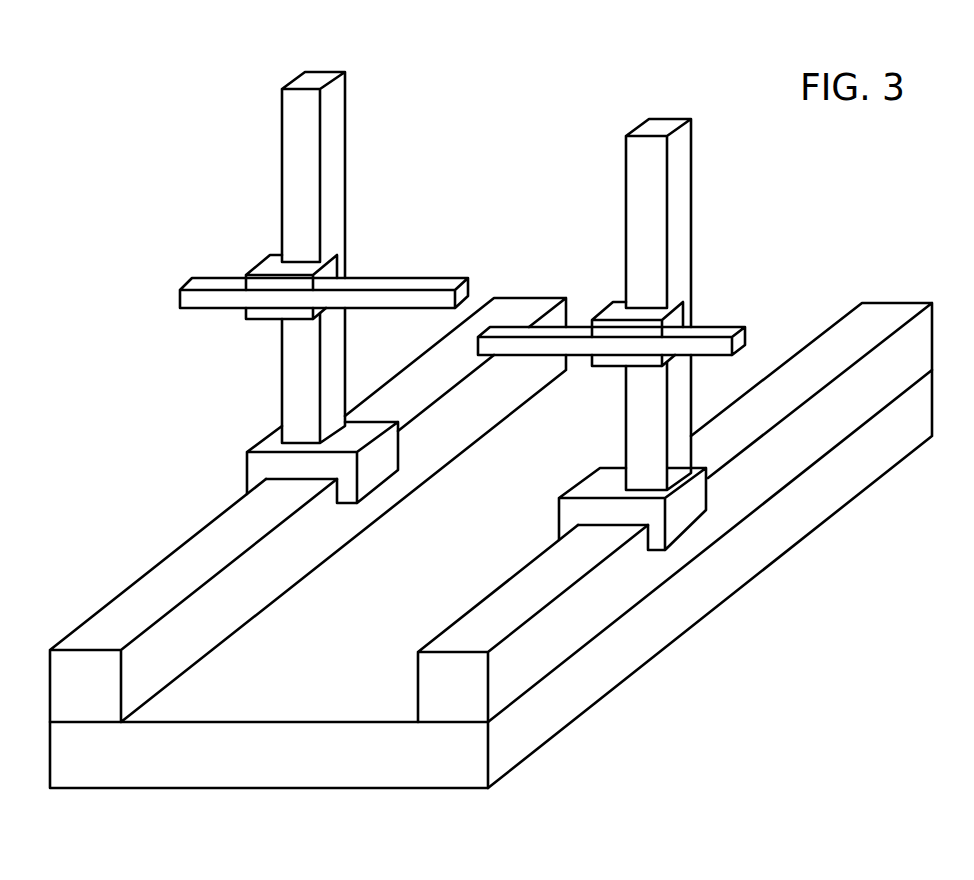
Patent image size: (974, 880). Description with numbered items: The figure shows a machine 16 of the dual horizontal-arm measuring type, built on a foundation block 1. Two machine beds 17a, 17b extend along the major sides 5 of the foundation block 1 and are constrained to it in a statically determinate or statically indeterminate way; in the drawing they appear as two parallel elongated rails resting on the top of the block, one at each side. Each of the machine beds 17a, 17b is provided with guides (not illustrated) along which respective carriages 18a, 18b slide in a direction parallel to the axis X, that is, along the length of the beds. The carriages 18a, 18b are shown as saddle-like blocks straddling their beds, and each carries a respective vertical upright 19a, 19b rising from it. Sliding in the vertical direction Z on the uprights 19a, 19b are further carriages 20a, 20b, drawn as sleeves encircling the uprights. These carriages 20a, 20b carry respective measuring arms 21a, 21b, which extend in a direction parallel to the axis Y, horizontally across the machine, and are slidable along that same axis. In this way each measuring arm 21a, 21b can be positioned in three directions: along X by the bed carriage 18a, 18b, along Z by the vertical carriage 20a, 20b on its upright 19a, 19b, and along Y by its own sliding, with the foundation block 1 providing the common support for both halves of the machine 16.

The foundation block 1 is at (248, 768).
The major sides 5 is at (643, 630).
The machine 16 is at (104, 134).
The machine bed 17a is at (178, 577).
The machine bed 17b is at (817, 443).
The carriage 18a is at (268, 445).
The carriage 18b is at (690, 513).
The vertical upright 19a is at (290, 155).
The vertical upright 19b is at (683, 203).
The carriage 20a is at (267, 268).
The carriage 20b is at (617, 312).
The measuring arm 21a is at (192, 301).
The measuring arm 21b is at (723, 330).